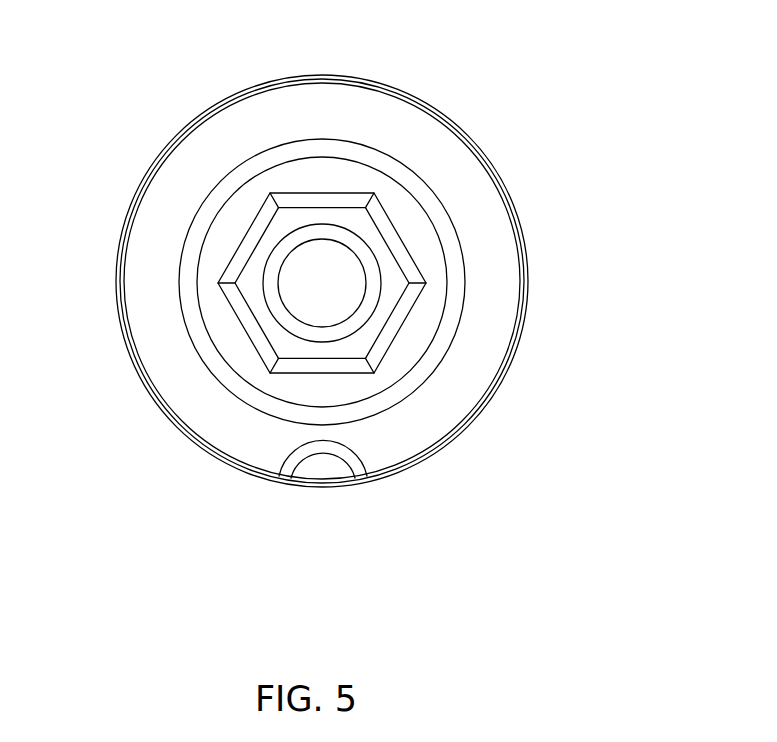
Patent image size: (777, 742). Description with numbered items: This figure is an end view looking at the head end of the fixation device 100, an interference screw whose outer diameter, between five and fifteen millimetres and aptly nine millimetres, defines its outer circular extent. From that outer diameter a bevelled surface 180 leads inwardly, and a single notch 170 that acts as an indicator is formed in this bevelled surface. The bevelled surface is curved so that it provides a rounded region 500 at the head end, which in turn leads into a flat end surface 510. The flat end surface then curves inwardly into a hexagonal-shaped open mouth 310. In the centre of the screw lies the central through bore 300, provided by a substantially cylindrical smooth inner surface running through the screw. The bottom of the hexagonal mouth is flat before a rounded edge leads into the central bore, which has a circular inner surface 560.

The fixation device 100 is at (586, 81).
The single notch 170 is at (325, 519).
The bevelled surface 180 is at (147, 328).
The central through bore 300 is at (337, 302).
The hexagonal-shaped open mouth 310 is at (396, 283).
The rounded region 500 is at (360, 155).
The flat end surface 510 is at (240, 217).
The circular inner surface 560 is at (284, 283).